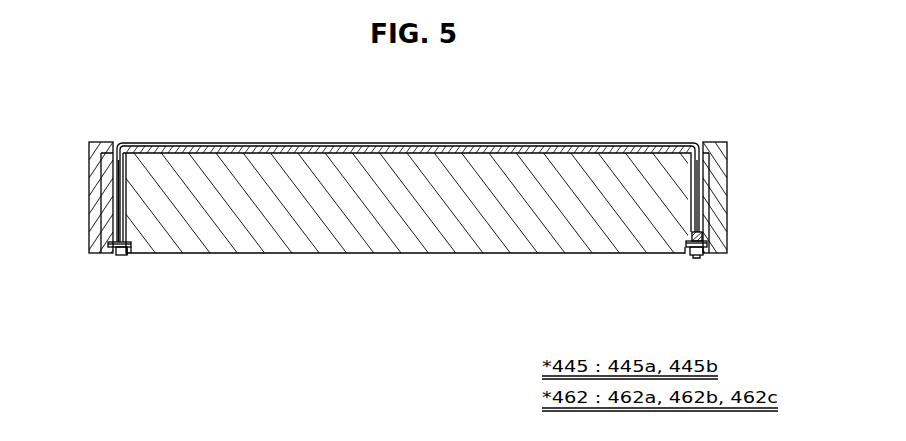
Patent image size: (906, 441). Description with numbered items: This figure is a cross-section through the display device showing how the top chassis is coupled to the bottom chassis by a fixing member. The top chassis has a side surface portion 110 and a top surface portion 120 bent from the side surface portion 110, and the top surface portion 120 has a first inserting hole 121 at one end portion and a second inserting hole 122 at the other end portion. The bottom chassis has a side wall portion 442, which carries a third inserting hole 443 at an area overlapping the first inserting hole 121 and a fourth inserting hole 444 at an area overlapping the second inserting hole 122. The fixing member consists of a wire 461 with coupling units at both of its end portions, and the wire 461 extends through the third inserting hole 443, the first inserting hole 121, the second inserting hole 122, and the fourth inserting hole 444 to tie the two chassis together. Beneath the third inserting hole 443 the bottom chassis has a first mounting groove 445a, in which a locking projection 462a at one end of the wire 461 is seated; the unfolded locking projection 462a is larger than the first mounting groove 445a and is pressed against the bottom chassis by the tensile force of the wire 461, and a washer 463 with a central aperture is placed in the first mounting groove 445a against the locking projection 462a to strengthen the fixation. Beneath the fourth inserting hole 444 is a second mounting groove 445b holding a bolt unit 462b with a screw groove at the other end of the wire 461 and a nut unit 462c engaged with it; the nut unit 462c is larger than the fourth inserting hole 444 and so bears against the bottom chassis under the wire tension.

The side surface portion 110 is at (722, 188).
The top surface portion 120 is at (713, 143).
The first inserting hole 121 is at (120, 143).
The second inserting hole 122 is at (700, 155).
The side wall portion 442 is at (407, 222).
The third inserting hole 443 is at (120, 222).
The fourth inserting hole 444 is at (697, 203).
The first mounting groove 445a is at (110, 254).
The second mounting groove 445b is at (705, 257).
The wire 461 is at (120, 171).
The locking projection 462a is at (120, 255).
The bolt unit 462b is at (678, 238).
The nut unit 462c is at (700, 256).
The washer 463 is at (129, 255).